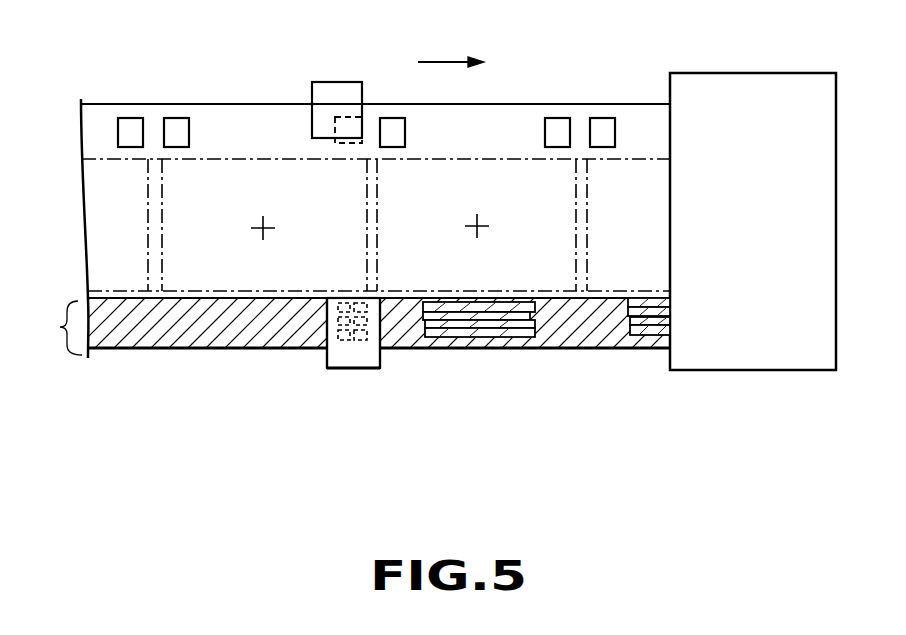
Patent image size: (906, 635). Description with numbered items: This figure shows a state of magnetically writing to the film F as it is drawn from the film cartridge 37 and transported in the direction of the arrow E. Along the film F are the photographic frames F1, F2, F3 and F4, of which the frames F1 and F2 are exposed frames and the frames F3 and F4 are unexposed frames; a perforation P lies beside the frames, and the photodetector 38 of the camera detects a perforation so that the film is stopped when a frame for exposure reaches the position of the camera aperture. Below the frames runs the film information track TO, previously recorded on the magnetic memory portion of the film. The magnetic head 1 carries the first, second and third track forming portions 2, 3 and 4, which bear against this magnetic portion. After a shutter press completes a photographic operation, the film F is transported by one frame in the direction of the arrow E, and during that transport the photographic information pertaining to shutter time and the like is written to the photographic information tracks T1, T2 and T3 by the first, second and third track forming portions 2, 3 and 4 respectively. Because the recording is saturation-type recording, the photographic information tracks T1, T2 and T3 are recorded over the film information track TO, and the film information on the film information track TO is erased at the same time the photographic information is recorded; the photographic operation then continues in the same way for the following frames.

The film F is at (220, 125).
The photographic frame F1 is at (637, 180).
The photographic frame F2 is at (498, 172).
The photographic frame F3 is at (268, 190).
The photographic frame F4 is at (102, 173).
The perforation P is at (130, 123).
The photodetector 38 is at (340, 92).
The film cartridge 37 is at (803, 103).
The arrow E is at (451, 49).
The film information track TO is at (49, 328).
The first track forming portion 2 is at (338, 306).
The second track forming portion 3 is at (338, 320).
The third track forming portion 4 is at (345, 335).
The magnetic head 1 is at (355, 368).
The photographic information track T1 is at (423, 305).
The photographic information track T2 is at (428, 315).
The photographic information track T3 is at (478, 333).